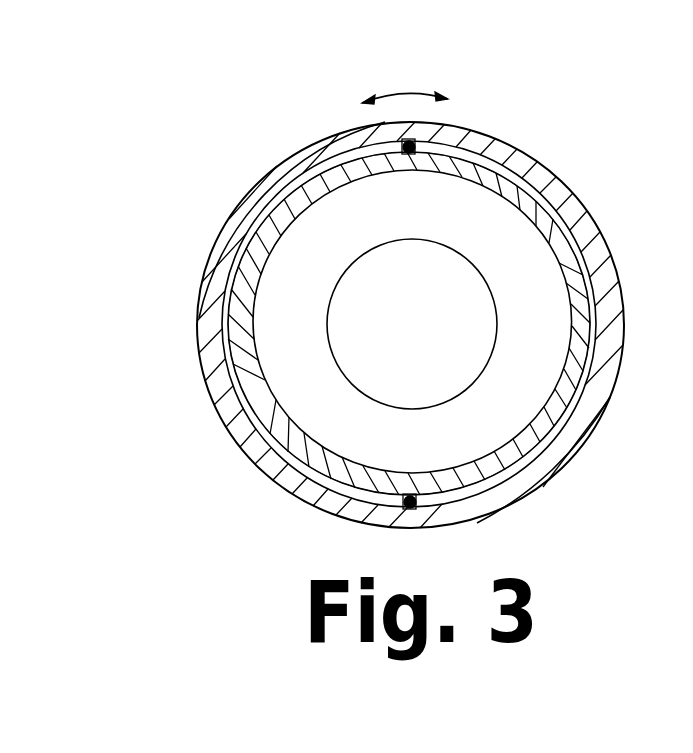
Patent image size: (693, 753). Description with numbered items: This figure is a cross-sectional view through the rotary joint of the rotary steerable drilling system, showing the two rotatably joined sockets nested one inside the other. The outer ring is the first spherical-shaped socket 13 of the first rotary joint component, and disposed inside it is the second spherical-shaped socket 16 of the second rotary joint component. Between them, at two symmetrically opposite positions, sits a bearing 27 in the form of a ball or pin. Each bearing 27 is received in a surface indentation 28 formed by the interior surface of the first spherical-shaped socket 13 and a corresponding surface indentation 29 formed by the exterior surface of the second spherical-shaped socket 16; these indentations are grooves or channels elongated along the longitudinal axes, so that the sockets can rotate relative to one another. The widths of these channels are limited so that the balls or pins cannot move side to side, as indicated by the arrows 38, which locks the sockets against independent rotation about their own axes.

The first spherical-shaped socket 13 is at (198, 328).
The second spherical-shaped socket 16 is at (250, 238).
The bearing 27 is at (418, 146).
The surface indentation 28 is at (428, 140).
The surface indentation 29 is at (404, 145).
The arrows indicating side-to-side motion 38 is at (408, 94).